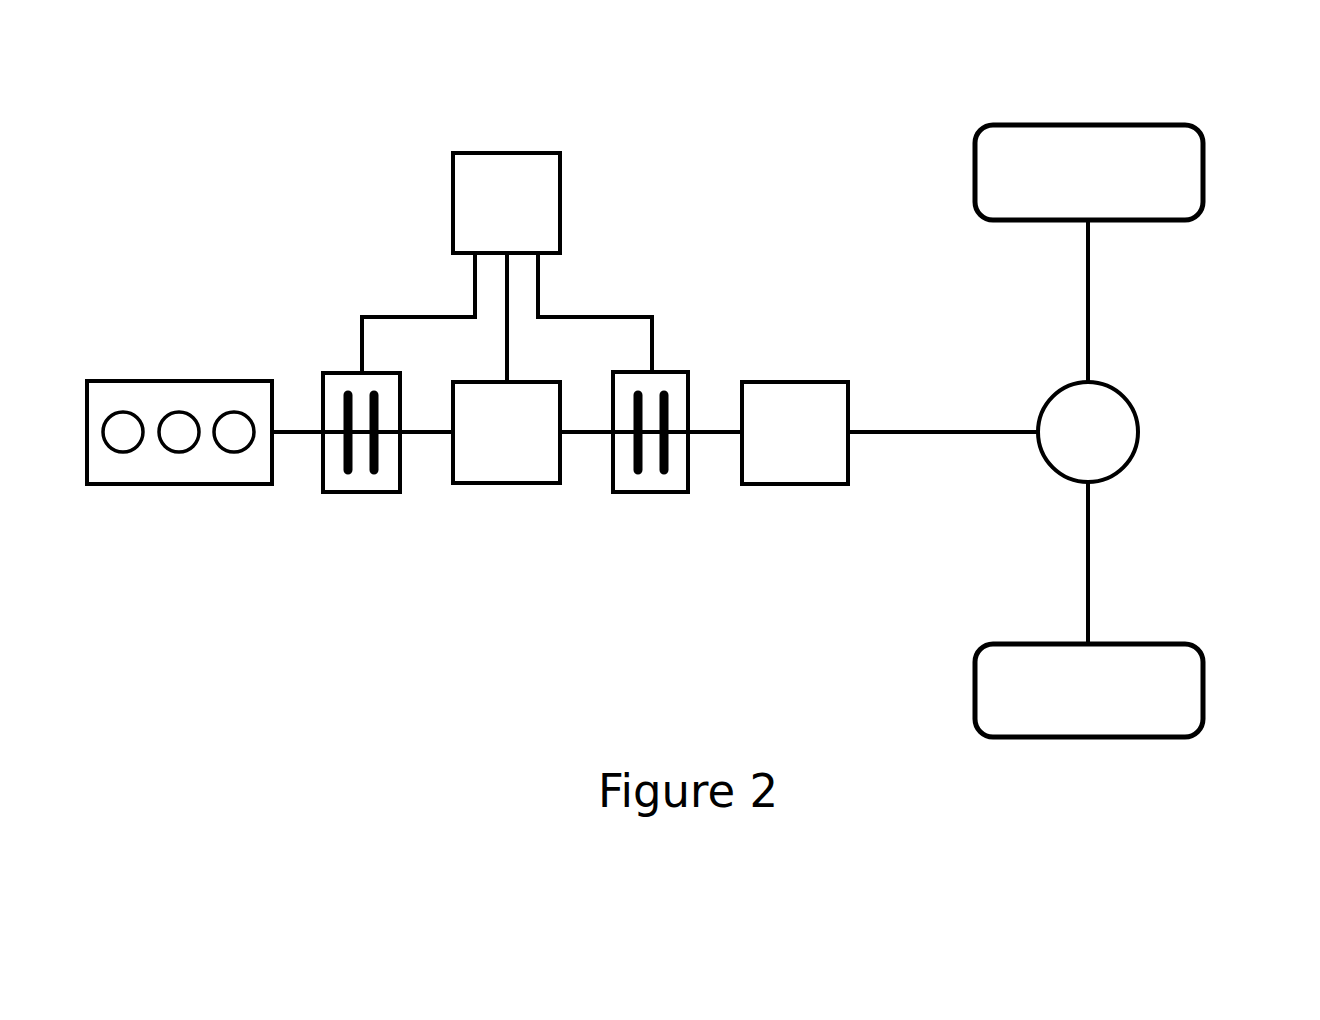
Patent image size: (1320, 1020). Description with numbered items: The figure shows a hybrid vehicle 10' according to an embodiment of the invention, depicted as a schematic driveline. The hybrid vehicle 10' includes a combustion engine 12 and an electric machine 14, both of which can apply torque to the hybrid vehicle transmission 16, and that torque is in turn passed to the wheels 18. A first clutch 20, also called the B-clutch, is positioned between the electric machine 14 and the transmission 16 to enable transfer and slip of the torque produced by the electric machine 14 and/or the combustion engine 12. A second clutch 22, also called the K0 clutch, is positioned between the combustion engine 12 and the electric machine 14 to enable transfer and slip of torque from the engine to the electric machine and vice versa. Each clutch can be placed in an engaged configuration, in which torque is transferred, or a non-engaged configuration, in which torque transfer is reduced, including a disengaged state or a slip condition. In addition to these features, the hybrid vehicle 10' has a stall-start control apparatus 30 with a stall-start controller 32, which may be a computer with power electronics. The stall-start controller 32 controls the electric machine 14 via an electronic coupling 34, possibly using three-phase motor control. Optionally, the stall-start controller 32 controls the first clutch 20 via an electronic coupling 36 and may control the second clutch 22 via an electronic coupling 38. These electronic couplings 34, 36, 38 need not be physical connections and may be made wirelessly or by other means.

The hybrid vehicle 10' is at (159, 171).
The combustion engine 12 is at (153, 465).
The electric machine 14 is at (517, 465).
The hybrid vehicle transmission 16 is at (818, 398).
The wheels 18 is at (1185, 172).
The first clutch 20 is at (657, 482).
The second clutch 22 is at (353, 482).
The stall-start control apparatus 30 is at (613, 260).
The stall-start controller 32 is at (468, 187).
The electronic coupling 34 is at (505, 353).
The electronic coupling 36 is at (653, 348).
The electronic coupling 38 is at (358, 343).